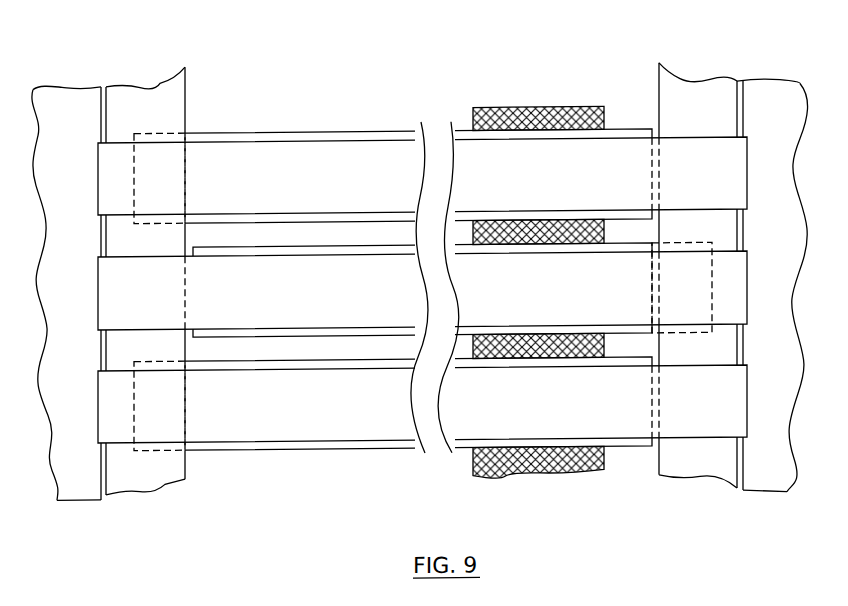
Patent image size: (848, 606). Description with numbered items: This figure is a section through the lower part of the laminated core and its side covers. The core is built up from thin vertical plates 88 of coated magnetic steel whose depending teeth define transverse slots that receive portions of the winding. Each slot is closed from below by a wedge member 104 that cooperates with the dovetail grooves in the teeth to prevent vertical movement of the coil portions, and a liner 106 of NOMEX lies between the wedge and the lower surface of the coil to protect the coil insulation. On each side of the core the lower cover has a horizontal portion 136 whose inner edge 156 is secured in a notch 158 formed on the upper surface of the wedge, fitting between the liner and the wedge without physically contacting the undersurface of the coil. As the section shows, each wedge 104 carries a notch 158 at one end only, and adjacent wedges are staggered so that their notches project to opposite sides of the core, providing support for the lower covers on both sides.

The vertical plates 88 is at (475, 463).
The wedge member 104 is at (292, 135).
The liner 106 is at (422, 287).
The horizontal portion 136 is at (68, 78).
The inner edge 156 is at (148, 85).
The notch 158 is at (156, 133).